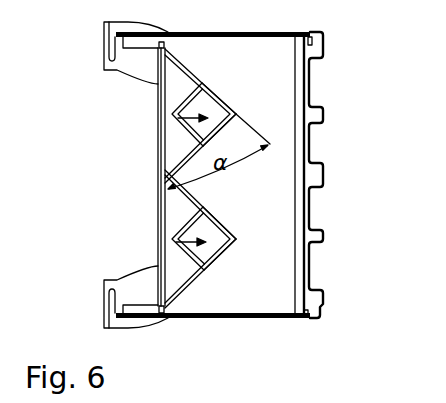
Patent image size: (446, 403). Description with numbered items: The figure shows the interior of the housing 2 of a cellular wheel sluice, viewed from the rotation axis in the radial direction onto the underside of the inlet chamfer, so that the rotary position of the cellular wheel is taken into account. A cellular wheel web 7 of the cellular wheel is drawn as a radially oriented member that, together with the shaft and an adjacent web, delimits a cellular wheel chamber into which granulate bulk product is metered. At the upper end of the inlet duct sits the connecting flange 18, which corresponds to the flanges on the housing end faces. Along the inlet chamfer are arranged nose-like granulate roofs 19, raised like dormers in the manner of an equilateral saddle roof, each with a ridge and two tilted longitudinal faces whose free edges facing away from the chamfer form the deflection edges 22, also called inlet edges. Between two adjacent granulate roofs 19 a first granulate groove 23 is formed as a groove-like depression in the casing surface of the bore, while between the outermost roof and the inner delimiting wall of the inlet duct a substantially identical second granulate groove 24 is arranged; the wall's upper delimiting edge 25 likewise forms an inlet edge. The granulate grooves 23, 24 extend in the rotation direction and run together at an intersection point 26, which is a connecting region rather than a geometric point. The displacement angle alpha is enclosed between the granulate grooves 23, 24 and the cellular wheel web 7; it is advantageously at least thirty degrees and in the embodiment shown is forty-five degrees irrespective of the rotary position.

The housing 2 is at (313, 45).
The cellular wheel web 7 is at (160, 170).
The connecting flange 18 is at (104, 40).
The granulate roof 19 is at (180, 119).
The deflection edge 22 is at (170, 216).
The first granulate groove 23 is at (243, 124).
The second granulate groove 24 is at (219, 94).
The delimiting edge 25 is at (176, 82).
The intersection point 26 is at (238, 114).